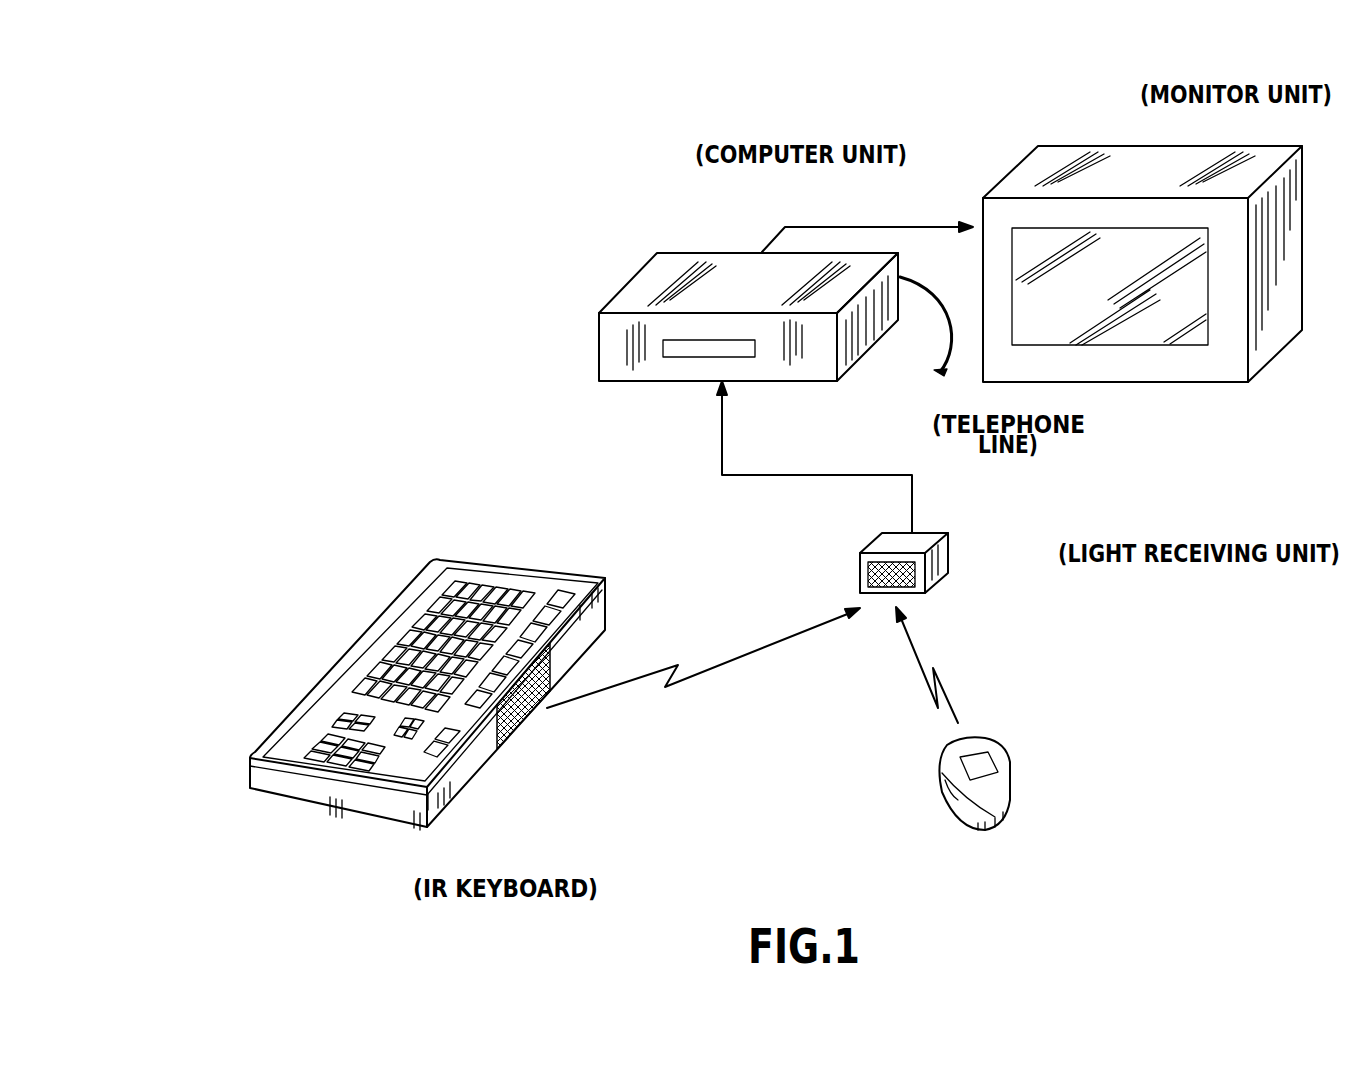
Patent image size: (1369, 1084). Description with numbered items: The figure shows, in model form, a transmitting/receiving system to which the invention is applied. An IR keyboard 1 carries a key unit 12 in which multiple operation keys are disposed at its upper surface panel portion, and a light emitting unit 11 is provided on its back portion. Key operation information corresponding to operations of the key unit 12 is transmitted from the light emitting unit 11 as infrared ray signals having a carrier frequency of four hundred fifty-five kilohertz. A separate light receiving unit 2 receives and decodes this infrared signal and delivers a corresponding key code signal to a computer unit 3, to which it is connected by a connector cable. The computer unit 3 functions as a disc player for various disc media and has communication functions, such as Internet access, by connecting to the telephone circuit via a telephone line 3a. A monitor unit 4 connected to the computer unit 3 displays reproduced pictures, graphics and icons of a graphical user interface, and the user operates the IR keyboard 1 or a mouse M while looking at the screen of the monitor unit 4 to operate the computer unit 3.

The IR keyboard 1 is at (483, 731).
The light emitting unit 11 is at (540, 728).
The key unit 12 is at (403, 555).
The light receiving unit 2 is at (952, 560).
The computer unit 3 is at (680, 252).
The telephone line 3a is at (930, 366).
The monitor unit 4 is at (1115, 150).
The mouse M is at (1013, 790).